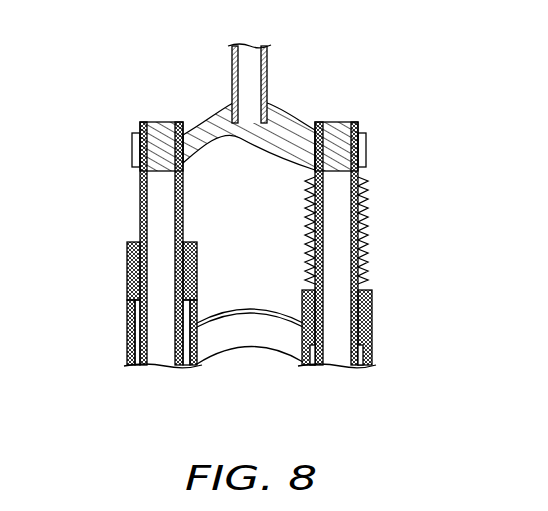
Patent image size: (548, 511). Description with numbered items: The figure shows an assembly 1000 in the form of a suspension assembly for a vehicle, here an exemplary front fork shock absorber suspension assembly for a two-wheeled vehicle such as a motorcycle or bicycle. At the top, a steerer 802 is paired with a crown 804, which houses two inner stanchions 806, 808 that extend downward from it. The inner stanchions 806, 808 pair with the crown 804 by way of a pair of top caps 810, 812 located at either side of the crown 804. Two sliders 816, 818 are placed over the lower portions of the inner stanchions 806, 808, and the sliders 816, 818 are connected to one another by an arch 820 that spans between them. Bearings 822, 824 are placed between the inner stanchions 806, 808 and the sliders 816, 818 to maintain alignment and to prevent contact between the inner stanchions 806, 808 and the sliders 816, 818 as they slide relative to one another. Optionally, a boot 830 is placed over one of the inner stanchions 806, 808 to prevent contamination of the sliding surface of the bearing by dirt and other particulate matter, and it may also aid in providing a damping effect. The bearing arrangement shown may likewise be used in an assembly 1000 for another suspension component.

The assembly 1000 is at (413, 63).
The steerer 802 is at (268, 74).
The crown 804 is at (275, 108).
The inner stanchion 806 is at (314, 166).
The inner stanchion 808 is at (185, 177).
The top cap 810 is at (146, 121).
The top cap 812 is at (334, 121).
The slider 816 is at (126, 270).
The slider 818 is at (371, 311).
The arch 820 is at (237, 310).
The bearing 822 is at (128, 284).
The bearing 824 is at (371, 327).
The boot 830 is at (371, 214).